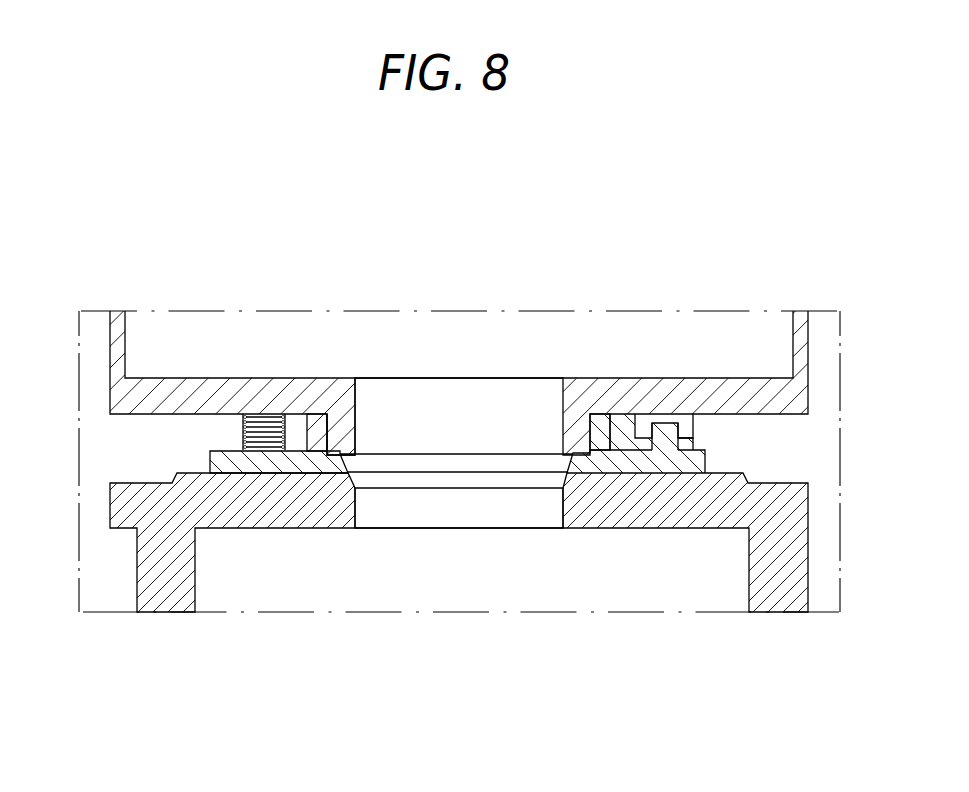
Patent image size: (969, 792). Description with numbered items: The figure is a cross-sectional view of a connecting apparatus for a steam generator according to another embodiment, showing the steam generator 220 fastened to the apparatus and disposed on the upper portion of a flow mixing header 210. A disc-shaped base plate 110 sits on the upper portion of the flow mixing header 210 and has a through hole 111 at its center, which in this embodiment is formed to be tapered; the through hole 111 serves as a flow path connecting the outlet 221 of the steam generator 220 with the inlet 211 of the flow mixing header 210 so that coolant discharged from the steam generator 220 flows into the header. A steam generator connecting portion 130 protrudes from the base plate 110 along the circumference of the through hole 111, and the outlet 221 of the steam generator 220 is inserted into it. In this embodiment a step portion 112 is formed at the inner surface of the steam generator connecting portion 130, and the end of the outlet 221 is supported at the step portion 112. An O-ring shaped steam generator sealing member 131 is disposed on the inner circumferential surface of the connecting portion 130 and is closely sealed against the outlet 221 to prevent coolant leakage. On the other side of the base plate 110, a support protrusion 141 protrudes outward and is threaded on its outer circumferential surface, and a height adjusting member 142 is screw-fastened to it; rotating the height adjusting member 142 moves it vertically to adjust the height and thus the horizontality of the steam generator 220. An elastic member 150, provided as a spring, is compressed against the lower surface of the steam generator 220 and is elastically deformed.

The steam generator 220 is at (117, 326).
The outlet of the steam generator 221 is at (345, 445).
The steam generator sealing member 131 is at (323, 433).
The steam generator connecting portion 130 is at (593, 433).
The through hole 111 is at (461, 460).
The elastic member 150 is at (243, 432).
The height adjusting member 142 is at (688, 422).
The support protrusion 141 is at (697, 443).
The base plate 110 is at (243, 453).
The step portion 112 is at (578, 456).
The flow mixing header 210 is at (167, 594).
The inlet of the flow mixing header 211 is at (463, 511).